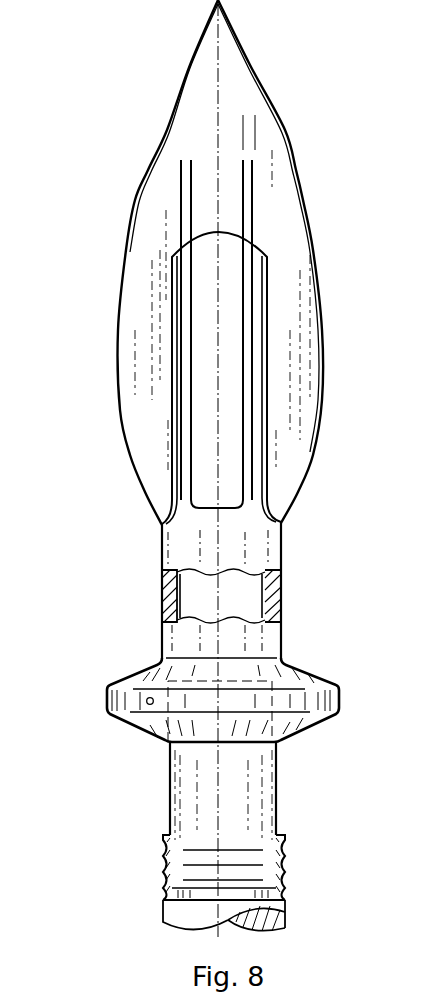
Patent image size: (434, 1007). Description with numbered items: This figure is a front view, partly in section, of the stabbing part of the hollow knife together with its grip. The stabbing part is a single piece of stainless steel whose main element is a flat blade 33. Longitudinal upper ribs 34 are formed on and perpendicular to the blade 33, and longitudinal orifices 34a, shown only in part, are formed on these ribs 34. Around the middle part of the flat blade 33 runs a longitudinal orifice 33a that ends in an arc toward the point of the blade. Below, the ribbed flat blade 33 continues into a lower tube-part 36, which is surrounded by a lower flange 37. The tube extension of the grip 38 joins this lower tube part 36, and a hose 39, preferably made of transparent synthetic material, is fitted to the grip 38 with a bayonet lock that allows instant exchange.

The flat blade 33 is at (262, 140).
The longitudinal orifice 33a is at (207, 379).
The upper ribs 34 is at (245, 276).
The longitudinal orifices 34a is at (183, 283).
The lower tube-part 36 is at (243, 593).
The lower flange 37 is at (291, 723).
The grip 38 is at (257, 793).
The hose 39 is at (265, 906).